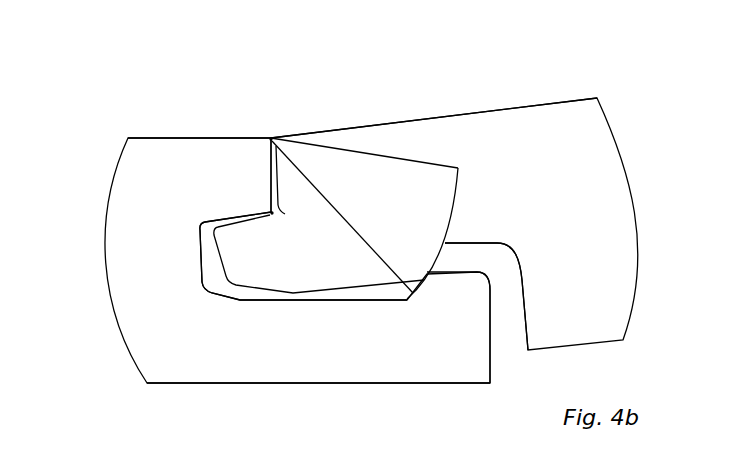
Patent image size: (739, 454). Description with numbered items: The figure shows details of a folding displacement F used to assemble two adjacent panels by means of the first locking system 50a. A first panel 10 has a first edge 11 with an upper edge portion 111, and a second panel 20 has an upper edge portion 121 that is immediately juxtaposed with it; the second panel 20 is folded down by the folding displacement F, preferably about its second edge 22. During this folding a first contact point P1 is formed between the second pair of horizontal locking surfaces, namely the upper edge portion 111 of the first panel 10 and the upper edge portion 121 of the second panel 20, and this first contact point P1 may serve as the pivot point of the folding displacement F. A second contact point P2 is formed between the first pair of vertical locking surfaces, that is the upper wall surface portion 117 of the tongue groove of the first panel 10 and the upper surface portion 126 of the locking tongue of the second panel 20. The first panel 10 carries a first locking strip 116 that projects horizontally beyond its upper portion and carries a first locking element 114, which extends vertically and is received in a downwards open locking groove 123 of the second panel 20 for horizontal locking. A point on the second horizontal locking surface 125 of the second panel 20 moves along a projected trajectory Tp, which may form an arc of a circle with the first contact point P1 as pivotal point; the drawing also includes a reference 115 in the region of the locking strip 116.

The first panel 10 is at (158, 291).
The second panel 20 is at (595, 187).
The first edge 11 is at (176, 122).
The second edge 22 is at (476, 82).
The first locking system 50a is at (93, 75).
The folding displacement F is at (595, 38).
The first contact point P1 is at (273, 133).
The second contact point P2 is at (280, 221).
The projected trajectory Tp is at (455, 196).
The upper edge portion 111 is at (269, 176).
The upper edge portion 121 is at (279, 155).
The groove edge 115 is at (412, 296).
The second horizontal locking surface 125 is at (437, 256).
The locking groove 123 is at (492, 244).
The upper wall surface portion 117 is at (221, 221).
The upper surface portion 126 is at (232, 225).
The first locking element 114 is at (452, 311).
The first locking strip 116 is at (342, 372).